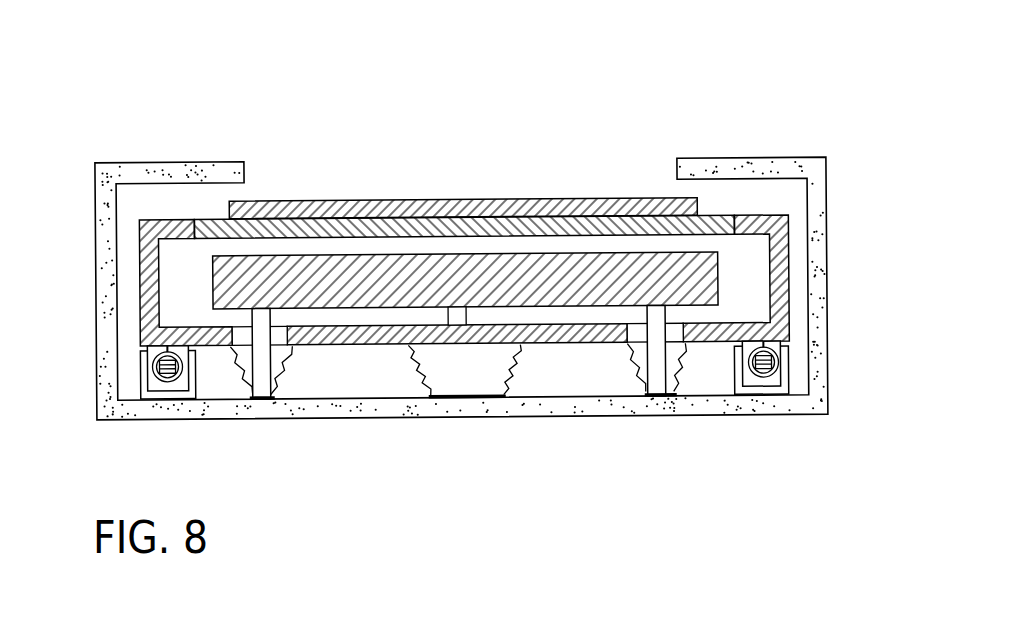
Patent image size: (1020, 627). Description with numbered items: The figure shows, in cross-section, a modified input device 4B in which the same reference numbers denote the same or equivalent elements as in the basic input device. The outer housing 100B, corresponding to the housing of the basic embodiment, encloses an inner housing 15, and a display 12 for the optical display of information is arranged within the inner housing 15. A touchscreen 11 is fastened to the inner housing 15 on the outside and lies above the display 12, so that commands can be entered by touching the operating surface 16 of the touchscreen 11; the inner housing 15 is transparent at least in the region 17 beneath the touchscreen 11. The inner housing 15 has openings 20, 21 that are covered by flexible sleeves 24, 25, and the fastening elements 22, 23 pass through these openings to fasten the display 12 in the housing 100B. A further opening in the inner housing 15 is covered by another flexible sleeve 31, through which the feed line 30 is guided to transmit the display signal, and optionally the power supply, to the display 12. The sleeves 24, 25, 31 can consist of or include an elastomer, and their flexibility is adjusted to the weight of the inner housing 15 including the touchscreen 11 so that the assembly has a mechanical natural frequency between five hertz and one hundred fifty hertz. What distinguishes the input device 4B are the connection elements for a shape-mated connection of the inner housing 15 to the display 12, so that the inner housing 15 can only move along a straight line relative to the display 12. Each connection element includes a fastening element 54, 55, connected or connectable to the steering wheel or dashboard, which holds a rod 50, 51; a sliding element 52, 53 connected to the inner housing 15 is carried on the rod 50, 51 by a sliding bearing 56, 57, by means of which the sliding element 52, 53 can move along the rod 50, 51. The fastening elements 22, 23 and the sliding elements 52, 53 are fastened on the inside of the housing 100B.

The housing 100B is at (123, 171).
The transparent region of the inner housing 17 is at (211, 218).
The operating surface 16 is at (300, 200).
The inner housing 15 is at (771, 220).
The touchscreen 11 is at (410, 209).
The display 12 is at (499, 270).
The feed line 30 is at (456, 319).
The flexible sleeve 31 is at (483, 362).
The opening 20 is at (279, 334).
The opening 21 is at (673, 333).
The fastening element 22 is at (258, 359).
The fastening element 23 is at (653, 358).
The flexible sleeve 24 is at (277, 387).
The flexible sleeve 25 is at (671, 379).
The rod 50 is at (160, 362).
The rod 51 is at (764, 361).
The sliding element 52 is at (153, 383).
The sliding element 53 is at (775, 381).
The fastening element 54 is at (157, 395).
The fastening element 55 is at (766, 390).
The sliding bearing 56 is at (167, 353).
The sliding bearing 57 is at (763, 350).
The input device 4B is at (826, 105).